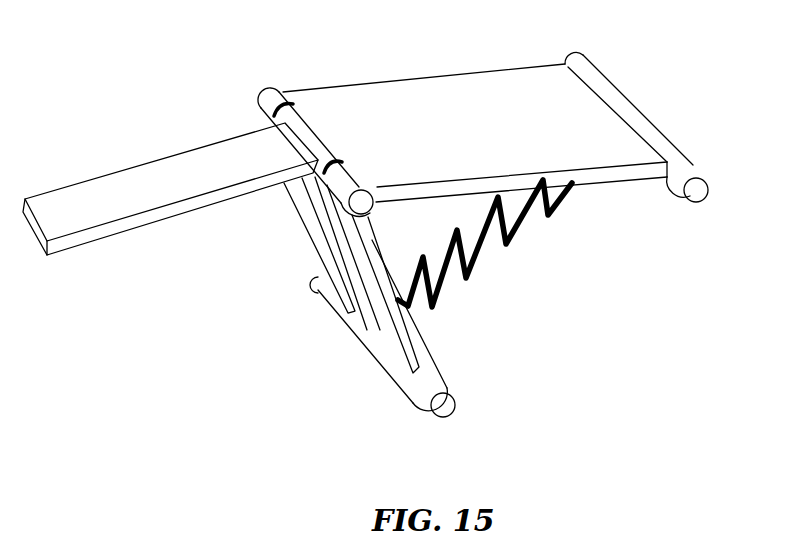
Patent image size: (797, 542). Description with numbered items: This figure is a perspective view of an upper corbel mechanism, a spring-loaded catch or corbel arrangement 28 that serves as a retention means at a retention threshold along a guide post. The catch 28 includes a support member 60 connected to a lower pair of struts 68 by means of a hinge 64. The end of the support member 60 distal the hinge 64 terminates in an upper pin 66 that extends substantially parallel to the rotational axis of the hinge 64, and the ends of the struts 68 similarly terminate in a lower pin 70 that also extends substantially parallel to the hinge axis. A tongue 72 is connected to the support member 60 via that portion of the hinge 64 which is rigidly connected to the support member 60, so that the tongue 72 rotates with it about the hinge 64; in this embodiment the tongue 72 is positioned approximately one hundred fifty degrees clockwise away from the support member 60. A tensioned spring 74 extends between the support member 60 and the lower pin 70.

The corbel arrangement 28 is at (297, 440).
The support member 60 is at (367, 79).
The hinge 64 is at (250, 97).
The upper pin 66 is at (709, 206).
The struts 68 is at (376, 333).
The lower pin 70 is at (465, 408).
The tongue 72 is at (147, 157).
The tensioned spring 74 is at (522, 248).